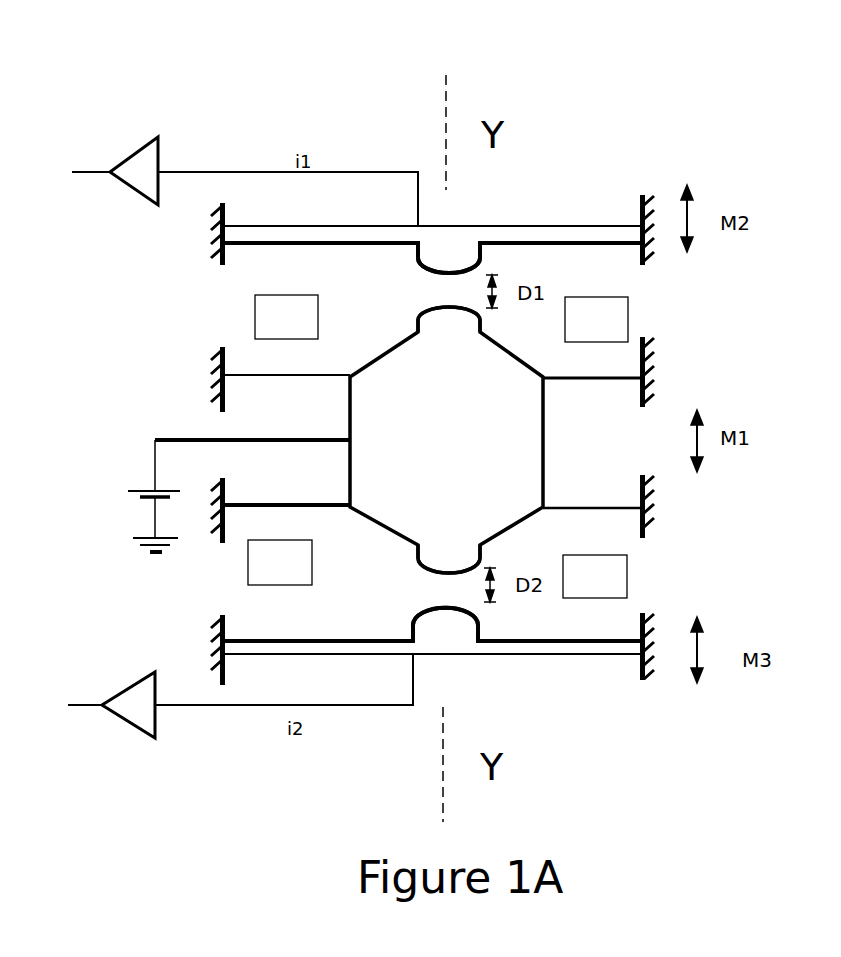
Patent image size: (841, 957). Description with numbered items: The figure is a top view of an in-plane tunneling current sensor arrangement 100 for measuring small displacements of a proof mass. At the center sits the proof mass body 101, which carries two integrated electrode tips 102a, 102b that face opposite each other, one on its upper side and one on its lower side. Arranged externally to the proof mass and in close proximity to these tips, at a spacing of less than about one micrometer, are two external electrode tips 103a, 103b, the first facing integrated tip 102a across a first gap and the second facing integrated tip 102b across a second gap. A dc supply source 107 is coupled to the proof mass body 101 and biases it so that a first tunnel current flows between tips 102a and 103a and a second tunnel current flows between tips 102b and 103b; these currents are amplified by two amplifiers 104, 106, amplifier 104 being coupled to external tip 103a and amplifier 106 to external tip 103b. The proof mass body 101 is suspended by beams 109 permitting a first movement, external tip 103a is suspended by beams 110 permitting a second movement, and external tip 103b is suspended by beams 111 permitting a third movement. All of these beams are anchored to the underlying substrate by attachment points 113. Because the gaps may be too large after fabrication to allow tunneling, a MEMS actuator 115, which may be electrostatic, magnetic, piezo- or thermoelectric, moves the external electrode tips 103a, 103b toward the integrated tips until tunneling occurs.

The in-plane tunneling current sensor arrangement 100 is at (720, 117).
The proof mass body 101 is at (446, 440).
The integrated electrode tip 102a is at (418, 320).
The integrated electrode tip 102b is at (418, 558).
The external electrode tip 103a is at (418, 262).
The external electrode tip 103b is at (413, 622).
The amplifier 104 is at (138, 156).
The amplifier 106 is at (130, 716).
The dc supply source 107 is at (140, 488).
The beams 109 is at (306, 377).
The beams 110 is at (330, 241).
The beams 111 is at (330, 639).
The attachment points 113 is at (207, 345).
The MEMS actuator 115 is at (303, 329).